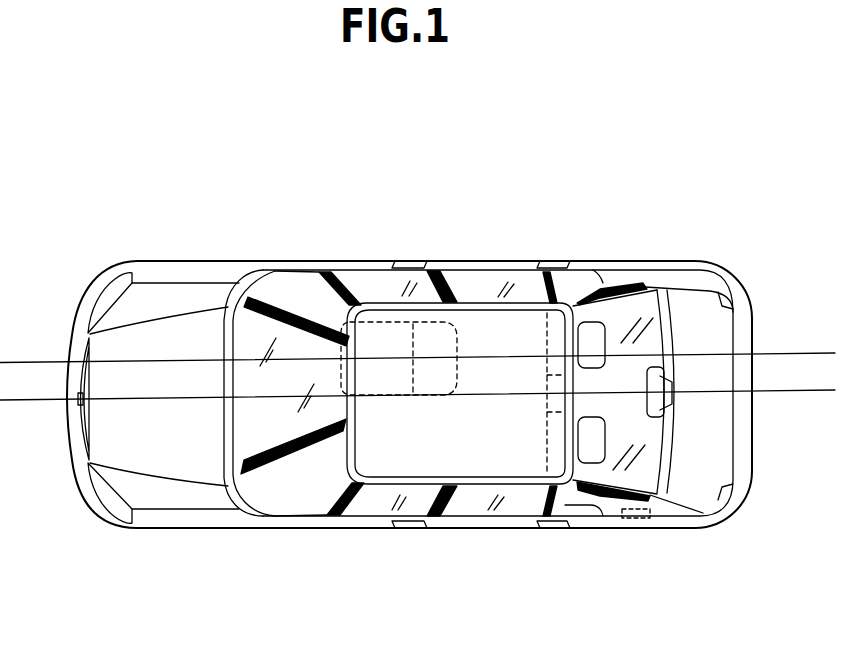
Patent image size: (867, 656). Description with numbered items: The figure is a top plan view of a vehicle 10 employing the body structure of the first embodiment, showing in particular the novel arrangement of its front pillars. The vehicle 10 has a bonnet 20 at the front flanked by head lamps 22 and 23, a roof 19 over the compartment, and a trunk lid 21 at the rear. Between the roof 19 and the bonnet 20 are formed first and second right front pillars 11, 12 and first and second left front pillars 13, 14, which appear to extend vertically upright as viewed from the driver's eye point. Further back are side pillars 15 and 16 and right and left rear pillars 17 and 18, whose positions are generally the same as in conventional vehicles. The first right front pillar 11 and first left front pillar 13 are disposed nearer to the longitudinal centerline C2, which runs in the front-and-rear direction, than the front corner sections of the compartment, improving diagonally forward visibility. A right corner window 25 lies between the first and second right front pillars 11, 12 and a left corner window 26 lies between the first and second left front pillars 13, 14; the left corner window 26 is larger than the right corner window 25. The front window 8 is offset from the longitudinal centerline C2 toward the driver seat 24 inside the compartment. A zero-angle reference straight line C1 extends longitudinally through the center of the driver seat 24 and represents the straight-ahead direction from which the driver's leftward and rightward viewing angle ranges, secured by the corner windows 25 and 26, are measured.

The front window 8 is at (226, 300).
The vehicle 10 is at (521, 145).
The first right front pillar 11 is at (290, 303).
The second right front pillar 12 is at (347, 318).
The first left front pillar 13 is at (242, 505).
The second left front pillar 14 is at (360, 510).
The side pillar 15 is at (452, 272).
The side pillar 16 is at (462, 497).
The right rear pillar 17 is at (620, 283).
The left rear pillar 18 is at (613, 500).
The roof 19 is at (513, 458).
The bonnet 20 is at (168, 347).
The trunk lid 21 is at (740, 450).
The head lamp 22 is at (117, 497).
The head lamp 23 is at (105, 303).
The driver seat 24 is at (387, 341).
The right corner window 25 is at (316, 290).
The left corner window 26 is at (300, 488).
The zero-angle reference straight line C1 is at (787, 351).
The longitudinal centerline C2 is at (798, 393).